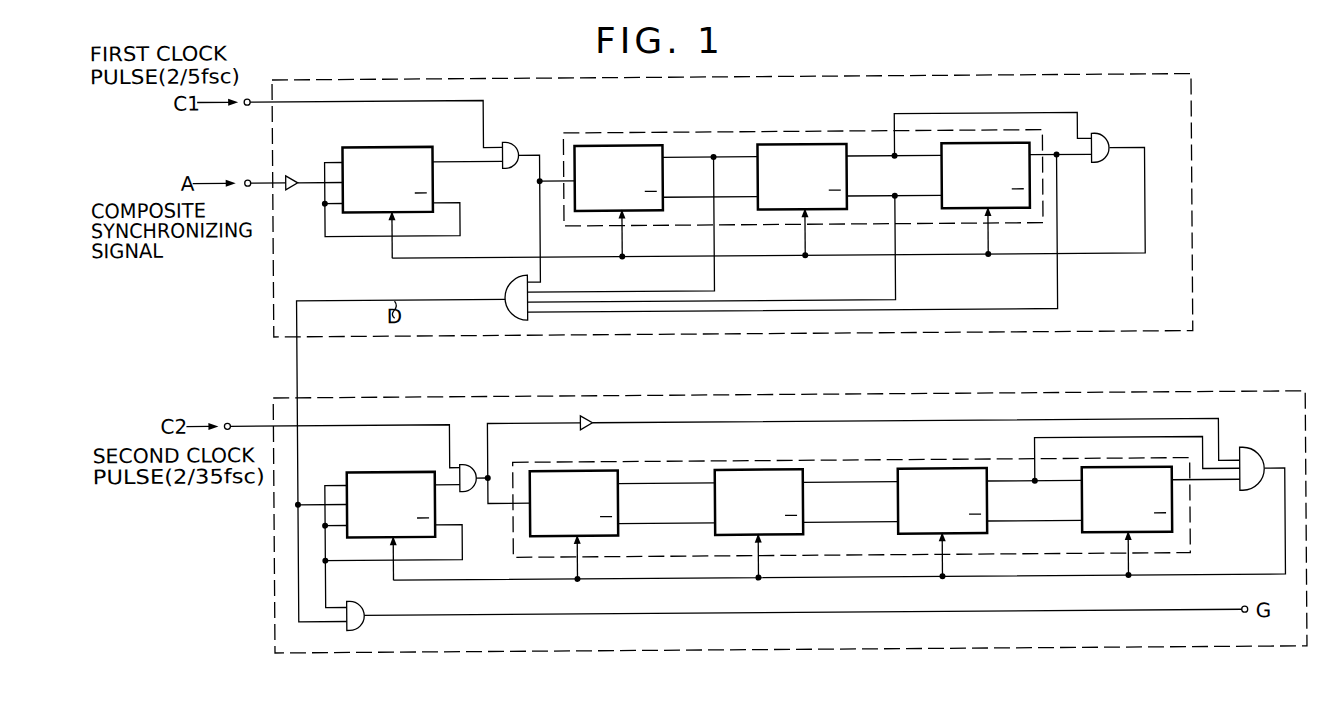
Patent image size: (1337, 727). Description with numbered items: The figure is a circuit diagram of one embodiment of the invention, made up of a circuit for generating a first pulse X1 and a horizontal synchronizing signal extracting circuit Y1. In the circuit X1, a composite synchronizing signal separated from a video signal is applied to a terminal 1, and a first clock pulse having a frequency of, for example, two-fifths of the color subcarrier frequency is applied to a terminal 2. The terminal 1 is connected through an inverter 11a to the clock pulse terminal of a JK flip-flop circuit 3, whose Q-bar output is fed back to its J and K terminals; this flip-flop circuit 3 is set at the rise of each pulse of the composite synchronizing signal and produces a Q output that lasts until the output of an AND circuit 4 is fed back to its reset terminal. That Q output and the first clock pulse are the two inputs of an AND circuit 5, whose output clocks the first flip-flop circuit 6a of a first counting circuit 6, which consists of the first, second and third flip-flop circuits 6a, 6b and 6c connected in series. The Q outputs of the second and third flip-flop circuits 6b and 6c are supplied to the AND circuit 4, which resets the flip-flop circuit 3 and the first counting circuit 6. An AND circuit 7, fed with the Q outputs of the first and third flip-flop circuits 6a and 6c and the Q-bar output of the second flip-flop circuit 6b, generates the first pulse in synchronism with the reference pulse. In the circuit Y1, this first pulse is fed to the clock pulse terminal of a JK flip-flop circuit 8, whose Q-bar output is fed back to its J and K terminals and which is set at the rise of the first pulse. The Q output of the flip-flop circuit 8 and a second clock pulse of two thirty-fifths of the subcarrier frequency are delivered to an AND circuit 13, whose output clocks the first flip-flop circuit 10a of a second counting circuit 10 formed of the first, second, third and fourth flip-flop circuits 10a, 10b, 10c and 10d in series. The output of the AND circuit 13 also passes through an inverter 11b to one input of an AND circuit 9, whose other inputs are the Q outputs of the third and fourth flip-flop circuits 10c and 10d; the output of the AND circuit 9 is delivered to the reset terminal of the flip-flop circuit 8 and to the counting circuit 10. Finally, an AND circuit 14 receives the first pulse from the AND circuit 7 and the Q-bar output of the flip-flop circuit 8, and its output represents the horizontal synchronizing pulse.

The terminal 1 is at (247, 176).
The terminal 2 is at (247, 105).
The JK flip-flop circuit 3 is at (382, 149).
The AND circuit 4 is at (1099, 142).
The AND circuit 5 is at (506, 145).
The first counting circuit 6 is at (710, 135).
The first flip-flop circuit 6a is at (616, 148).
The second flip-flop circuit 6b is at (800, 148).
The third flip-flop circuit 6c is at (1008, 214).
The AND circuit 7 is at (505, 284).
The JK flip-flop circuit 8 is at (391, 473).
The AND circuit 9 is at (1252, 463).
The second counting circuit 10 is at (834, 464).
The first flip-flop circuit 10a is at (554, 473).
The second flip-flop circuit 10b is at (755, 473).
The third flip-flop circuit 10c is at (938, 473).
The fourth flip-flop circuit 10d is at (1169, 520).
The inverter 11a is at (290, 191).
The inverter 11b is at (586, 433).
The AND circuit 13 is at (460, 465).
The AND circuit 14 is at (351, 603).
The circuit for generating a first pulse X1 is at (1008, 80).
The horizontal synchronizing signal extracting circuit Y1 is at (1224, 399).